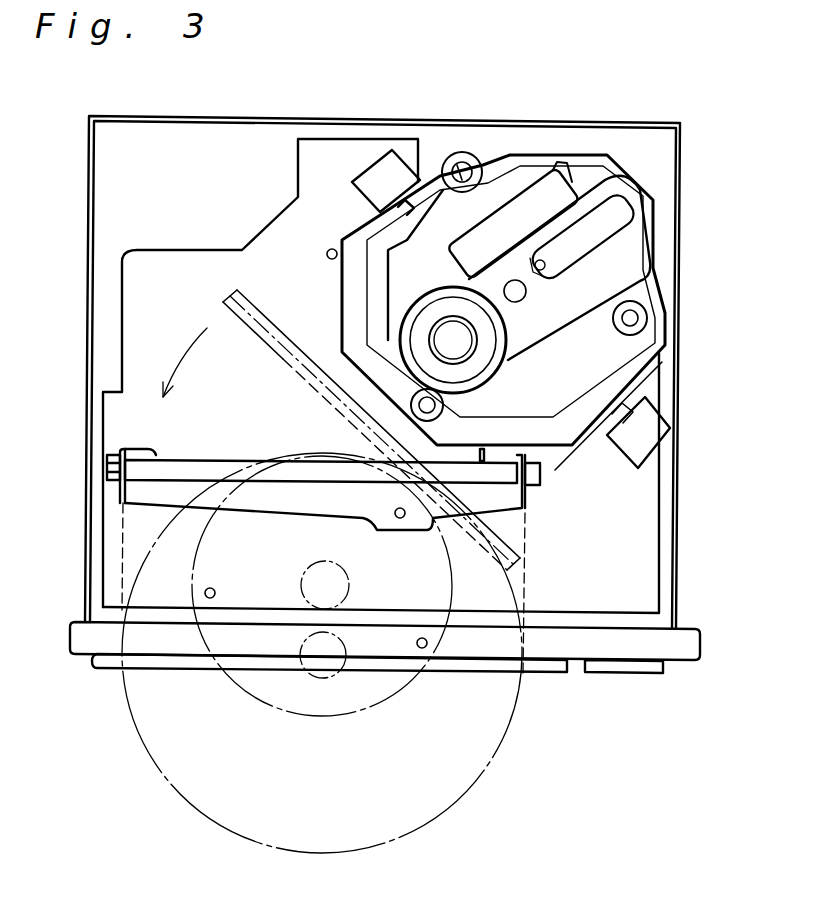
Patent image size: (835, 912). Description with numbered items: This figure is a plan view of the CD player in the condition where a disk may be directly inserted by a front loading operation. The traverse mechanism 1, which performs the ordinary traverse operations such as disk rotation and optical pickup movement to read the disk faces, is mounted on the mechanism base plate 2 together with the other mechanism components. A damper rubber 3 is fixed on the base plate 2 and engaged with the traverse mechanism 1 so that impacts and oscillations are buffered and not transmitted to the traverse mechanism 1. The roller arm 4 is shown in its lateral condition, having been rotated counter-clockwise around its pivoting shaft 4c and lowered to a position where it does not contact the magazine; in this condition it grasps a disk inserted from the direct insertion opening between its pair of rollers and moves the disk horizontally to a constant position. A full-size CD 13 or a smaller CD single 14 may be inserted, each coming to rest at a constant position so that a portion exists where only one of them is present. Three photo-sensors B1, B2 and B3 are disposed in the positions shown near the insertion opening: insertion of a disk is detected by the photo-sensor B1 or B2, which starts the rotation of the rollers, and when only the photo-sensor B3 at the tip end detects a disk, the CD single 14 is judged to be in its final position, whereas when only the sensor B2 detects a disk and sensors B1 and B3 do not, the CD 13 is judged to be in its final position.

The traverse mechanism 1 is at (632, 237).
The mechanism base plate 2 is at (613, 523).
The damper rubber 3 is at (652, 430).
The roller arm 4 is at (148, 456).
The pivoting shaft 4c is at (403, 518).
The CD 13 is at (440, 817).
The CD single 14 is at (275, 710).
The photo-sensor B1 is at (423, 649).
The photo-sensor B2 is at (213, 588).
The photo-sensor B3 is at (326, 255).